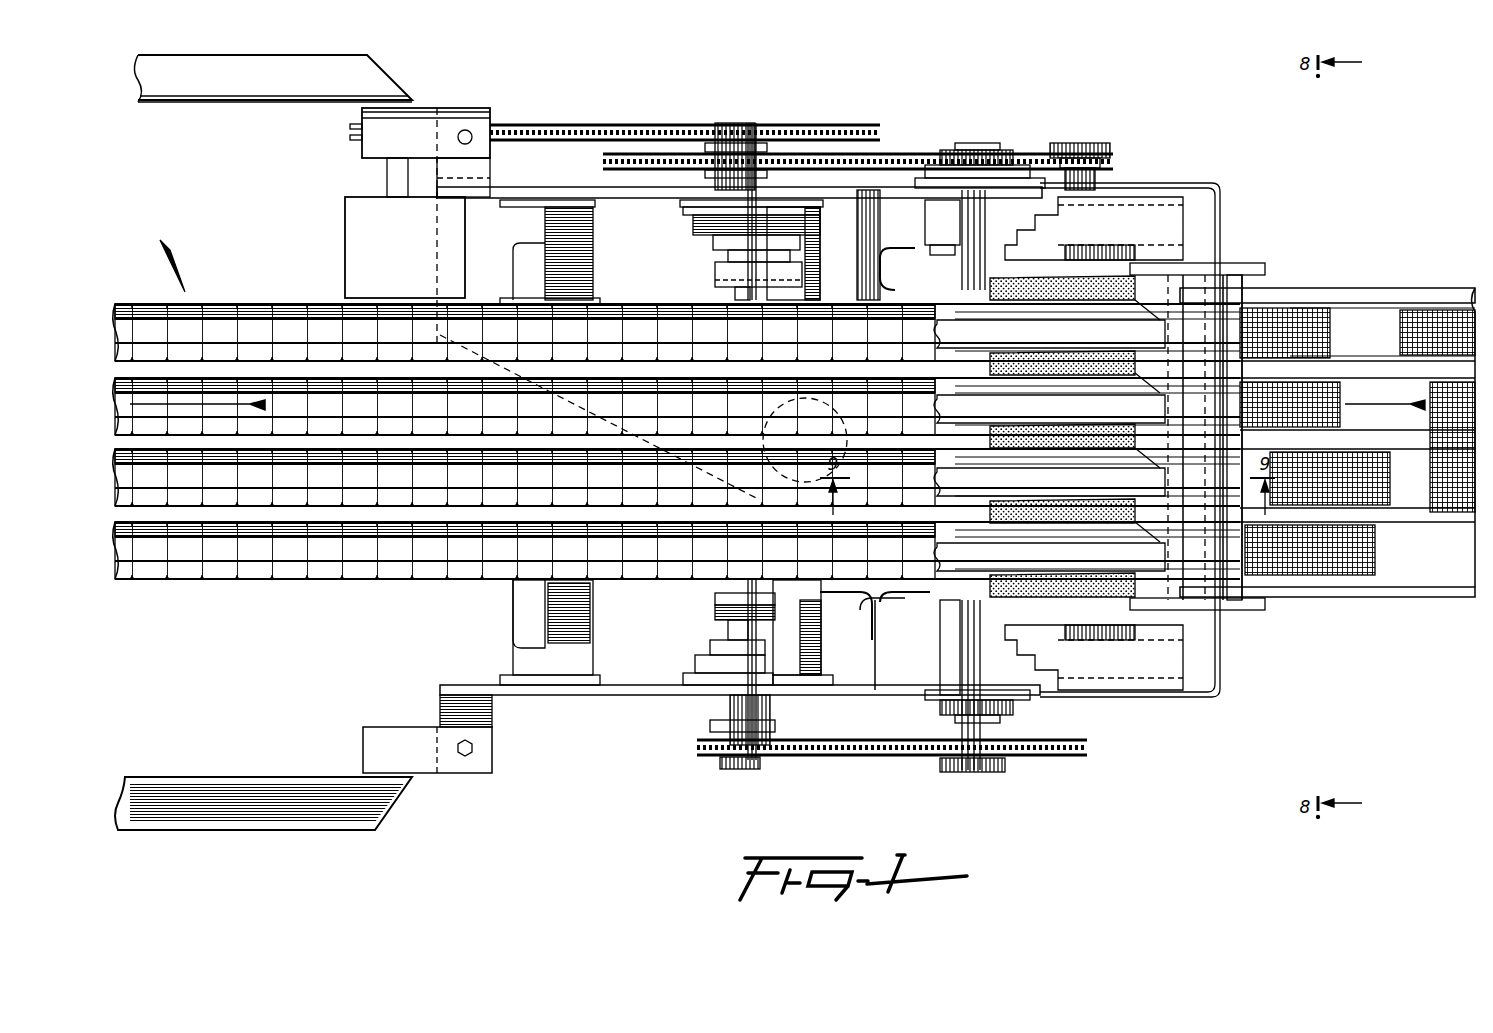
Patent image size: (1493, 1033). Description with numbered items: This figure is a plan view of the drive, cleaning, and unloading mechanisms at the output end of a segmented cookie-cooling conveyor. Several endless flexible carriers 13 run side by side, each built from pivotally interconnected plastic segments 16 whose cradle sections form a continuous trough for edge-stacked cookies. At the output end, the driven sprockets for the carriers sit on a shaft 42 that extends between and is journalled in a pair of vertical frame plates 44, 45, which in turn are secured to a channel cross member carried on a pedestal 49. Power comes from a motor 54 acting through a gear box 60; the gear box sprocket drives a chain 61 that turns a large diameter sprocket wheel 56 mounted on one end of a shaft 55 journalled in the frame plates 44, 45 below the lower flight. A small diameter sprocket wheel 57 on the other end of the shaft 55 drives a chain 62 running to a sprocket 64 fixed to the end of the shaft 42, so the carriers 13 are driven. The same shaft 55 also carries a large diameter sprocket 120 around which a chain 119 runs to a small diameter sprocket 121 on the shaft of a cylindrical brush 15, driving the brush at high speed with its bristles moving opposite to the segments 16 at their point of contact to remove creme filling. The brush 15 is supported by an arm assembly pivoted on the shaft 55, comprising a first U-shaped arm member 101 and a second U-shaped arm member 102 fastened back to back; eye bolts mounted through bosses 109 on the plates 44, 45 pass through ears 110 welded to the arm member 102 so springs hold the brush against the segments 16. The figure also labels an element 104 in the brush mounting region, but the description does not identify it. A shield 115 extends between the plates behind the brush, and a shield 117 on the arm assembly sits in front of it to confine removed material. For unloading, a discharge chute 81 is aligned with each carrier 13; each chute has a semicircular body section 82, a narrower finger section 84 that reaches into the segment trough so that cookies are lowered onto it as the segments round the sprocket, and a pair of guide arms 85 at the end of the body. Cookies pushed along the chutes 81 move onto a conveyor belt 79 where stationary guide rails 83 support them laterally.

The flexible carrier 13 is at (165, 244).
The cylindrical brush 15 is at (1170, 282).
The plastic segment 16 is at (243, 352).
The shaft 42 is at (985, 235).
The frame plate 44 is at (905, 192).
The frame plate 45 is at (635, 695).
The pedestal 49 is at (760, 515).
The motor 54 is at (493, 227).
The shaft 55 is at (735, 632).
The large diameter sprocket wheel 56 is at (832, 130).
The small diameter sprocket wheel 57 is at (715, 758).
The gear box 60 is at (355, 245).
The chain 61 is at (533, 128).
The chain 62 is at (845, 758).
The sprocket 64 is at (1015, 760).
The conveyor belt 79 is at (1380, 328).
The discharge chute 81 is at (1185, 305).
The body section 82 is at (1232, 303).
The guide rail 83 is at (1345, 290).
The finger section 84 is at (895, 290).
The guide arm 85 is at (1130, 650).
The first U-shaped arm member 101 is at (862, 615).
The second U-shaped arm member 102 is at (848, 197).
The gear 104 is at (1062, 255).
The boss 109 is at (935, 210).
The ear 110 is at (985, 172).
The shield 115 is at (1220, 213).
The shield 117 is at (872, 608).
The chain 119 is at (895, 140).
The large diameter sprocket 120 is at (637, 153).
The small diameter sprocket 121 is at (1080, 155).